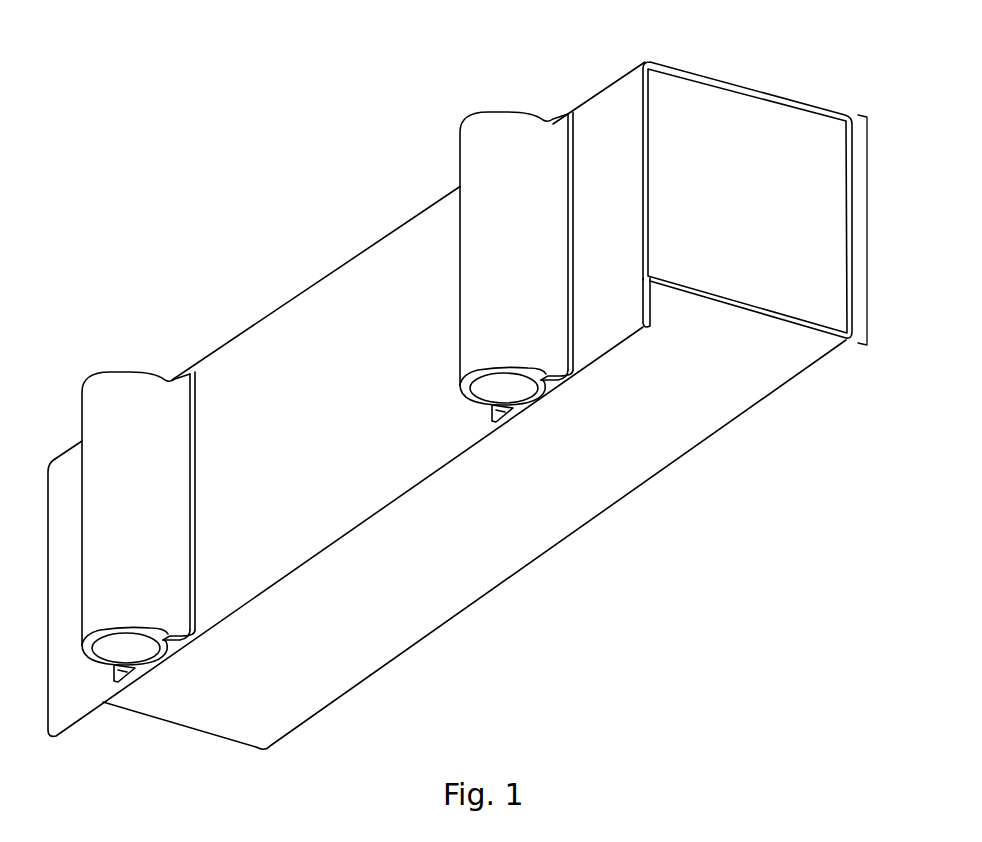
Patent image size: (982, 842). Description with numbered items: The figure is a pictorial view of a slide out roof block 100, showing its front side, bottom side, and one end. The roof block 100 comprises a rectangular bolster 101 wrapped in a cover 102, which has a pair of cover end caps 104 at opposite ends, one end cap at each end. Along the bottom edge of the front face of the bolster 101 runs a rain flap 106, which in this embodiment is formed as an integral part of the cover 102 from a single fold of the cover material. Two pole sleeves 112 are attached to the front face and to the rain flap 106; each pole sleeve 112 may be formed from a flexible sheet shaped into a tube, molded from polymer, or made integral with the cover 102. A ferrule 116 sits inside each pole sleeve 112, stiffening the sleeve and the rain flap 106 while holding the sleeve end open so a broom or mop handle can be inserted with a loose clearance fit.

The slide out roof block 100 is at (155, 167).
The rectangular bolster 101 is at (867, 232).
The cover 102 is at (328, 275).
The cover end cap 104 is at (703, 103).
The rain flap 106 is at (643, 330).
The pole sleeve 112 is at (122, 371).
The ferrule 116 is at (157, 653).